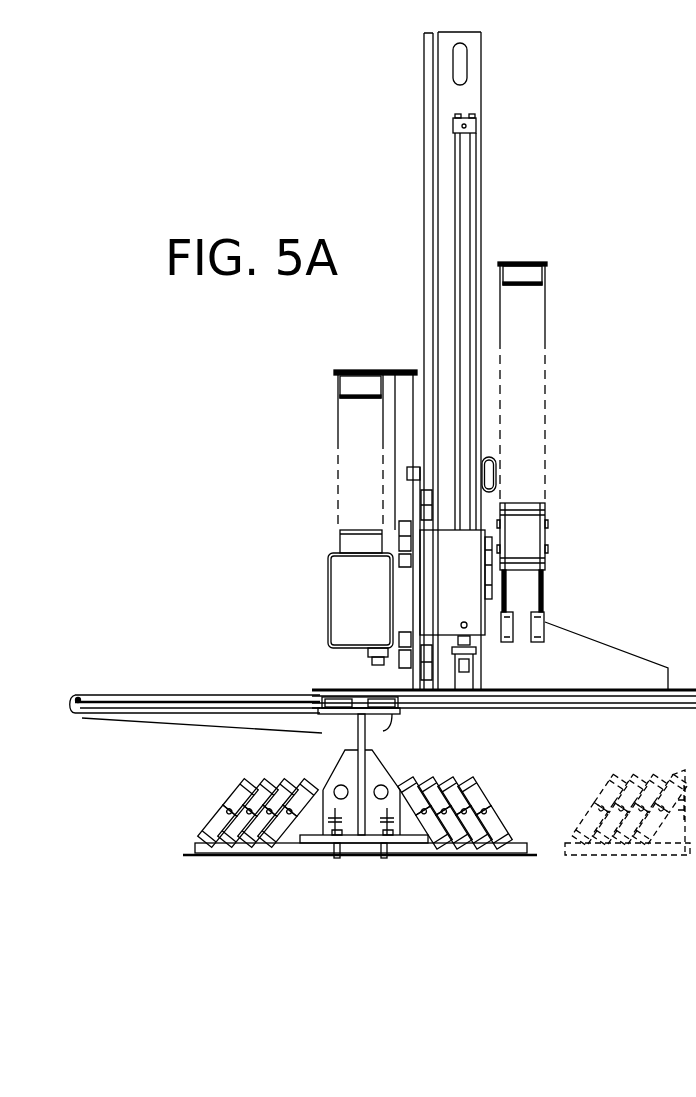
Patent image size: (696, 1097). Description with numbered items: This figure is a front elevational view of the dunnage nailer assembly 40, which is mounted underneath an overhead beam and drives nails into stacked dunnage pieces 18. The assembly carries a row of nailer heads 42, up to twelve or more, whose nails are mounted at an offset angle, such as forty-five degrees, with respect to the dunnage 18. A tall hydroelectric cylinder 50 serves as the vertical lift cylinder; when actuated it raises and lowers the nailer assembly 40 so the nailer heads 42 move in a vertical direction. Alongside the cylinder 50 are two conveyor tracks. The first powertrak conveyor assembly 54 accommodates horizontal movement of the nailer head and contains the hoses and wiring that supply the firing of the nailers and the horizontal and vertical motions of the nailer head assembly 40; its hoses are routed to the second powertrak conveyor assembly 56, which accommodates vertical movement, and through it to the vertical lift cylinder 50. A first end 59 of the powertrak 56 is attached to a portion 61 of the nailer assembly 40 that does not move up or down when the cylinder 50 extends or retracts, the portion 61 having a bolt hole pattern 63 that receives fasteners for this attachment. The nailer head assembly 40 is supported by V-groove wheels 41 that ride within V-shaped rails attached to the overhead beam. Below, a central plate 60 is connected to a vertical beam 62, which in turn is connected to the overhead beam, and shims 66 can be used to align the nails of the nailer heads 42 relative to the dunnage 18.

The dunnage pieces 18 is at (207, 856).
The dunnage nailer assembly 40 is at (368, 842).
The V-groove wheels 41 is at (400, 533).
The nailer heads 42 is at (246, 797).
The hydroelectric cylinder 50 is at (500, 190).
The first powertrak conveyor assembly 54 is at (333, 430).
The second powertrak conveyor assembly 56 is at (560, 430).
The first end 59 is at (552, 568).
The central plate 60 is at (380, 774).
The portion 61 is at (608, 660).
The vertical beam 62 is at (360, 766).
The bolt hole pattern 63 is at (540, 625).
The shims 66 is at (226, 851).